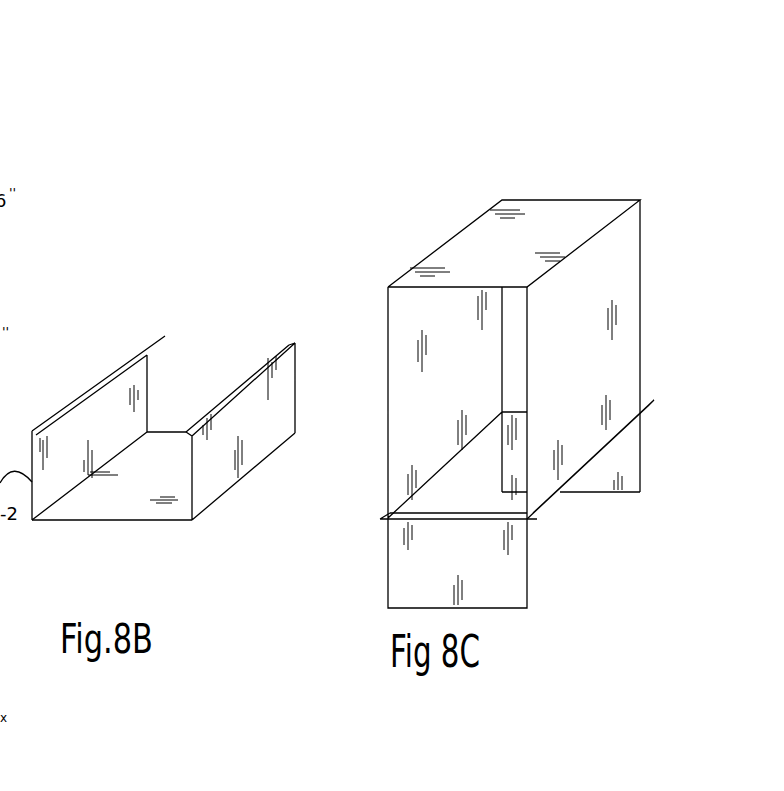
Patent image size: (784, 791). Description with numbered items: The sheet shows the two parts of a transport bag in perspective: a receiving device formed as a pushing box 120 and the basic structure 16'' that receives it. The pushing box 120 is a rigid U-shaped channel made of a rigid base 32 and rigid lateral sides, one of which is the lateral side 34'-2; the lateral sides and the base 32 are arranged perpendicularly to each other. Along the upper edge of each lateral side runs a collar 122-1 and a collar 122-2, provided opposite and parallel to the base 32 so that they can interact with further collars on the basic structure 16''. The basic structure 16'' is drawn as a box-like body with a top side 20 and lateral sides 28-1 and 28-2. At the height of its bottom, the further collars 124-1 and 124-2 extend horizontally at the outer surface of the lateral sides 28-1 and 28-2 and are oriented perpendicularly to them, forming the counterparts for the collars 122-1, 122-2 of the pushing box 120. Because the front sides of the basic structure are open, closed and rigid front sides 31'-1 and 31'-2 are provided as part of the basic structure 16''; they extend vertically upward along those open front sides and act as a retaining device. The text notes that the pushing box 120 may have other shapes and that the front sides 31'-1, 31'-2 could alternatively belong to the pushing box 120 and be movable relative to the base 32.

In FIG. 8B, the pushing box 120 is at (208, 292).
In FIG. 8B, the collar 122-1 is at (166, 332).
In FIG. 8B, the collar 122-2 is at (292, 340).
In FIG. 8B, the rigid lateral side 34'-2 is at (268, 431).
In FIG. 8B, the base 32 is at (125, 500).
In FIG. 8C, the basic structure 16'' is at (529, 330).
In FIG. 8C, the top side 20 is at (474, 242).
In FIG. 8C, the lateral side 28-1 is at (375, 336).
In FIG. 8C, the lateral side 28-2 is at (618, 258).
In FIG. 8C, the front side 31'-1 is at (511, 563).
In FIG. 8C, the front side 31'-2 is at (646, 436).
In FIG. 8C, the further collar 124-1 is at (380, 518).
In FIG. 8C, the further collar 124-2 is at (540, 516).